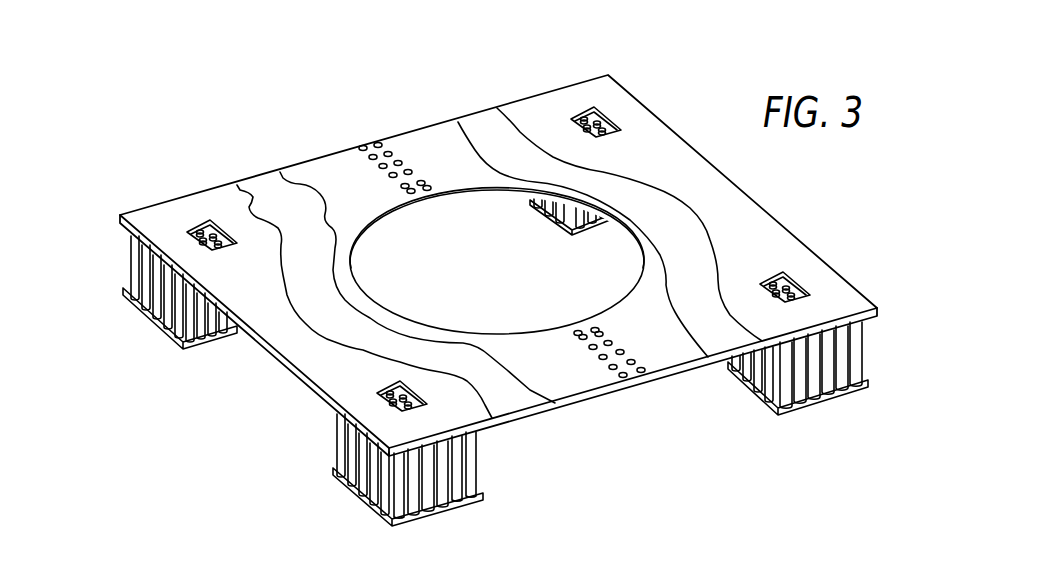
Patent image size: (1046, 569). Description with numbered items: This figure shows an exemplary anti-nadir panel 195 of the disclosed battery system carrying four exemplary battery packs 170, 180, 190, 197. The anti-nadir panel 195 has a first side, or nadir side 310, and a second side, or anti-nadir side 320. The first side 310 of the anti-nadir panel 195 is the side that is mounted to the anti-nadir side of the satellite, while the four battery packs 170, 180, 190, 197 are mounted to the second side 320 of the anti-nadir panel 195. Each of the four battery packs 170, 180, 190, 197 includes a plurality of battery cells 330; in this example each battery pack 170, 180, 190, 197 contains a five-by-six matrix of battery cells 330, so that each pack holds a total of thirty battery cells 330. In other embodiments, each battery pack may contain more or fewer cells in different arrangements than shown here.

The battery pack 170 is at (527, 215).
The battery pack 180 is at (738, 398).
The battery pack 190 is at (320, 485).
The anti-nadir panel 195 is at (365, 135).
The battery pack 197 is at (150, 324).
The first side (nadir side) 310 is at (677, 168).
The second side (anti-nadir side) 320 is at (595, 398).
The battery cells 330 is at (503, 351).